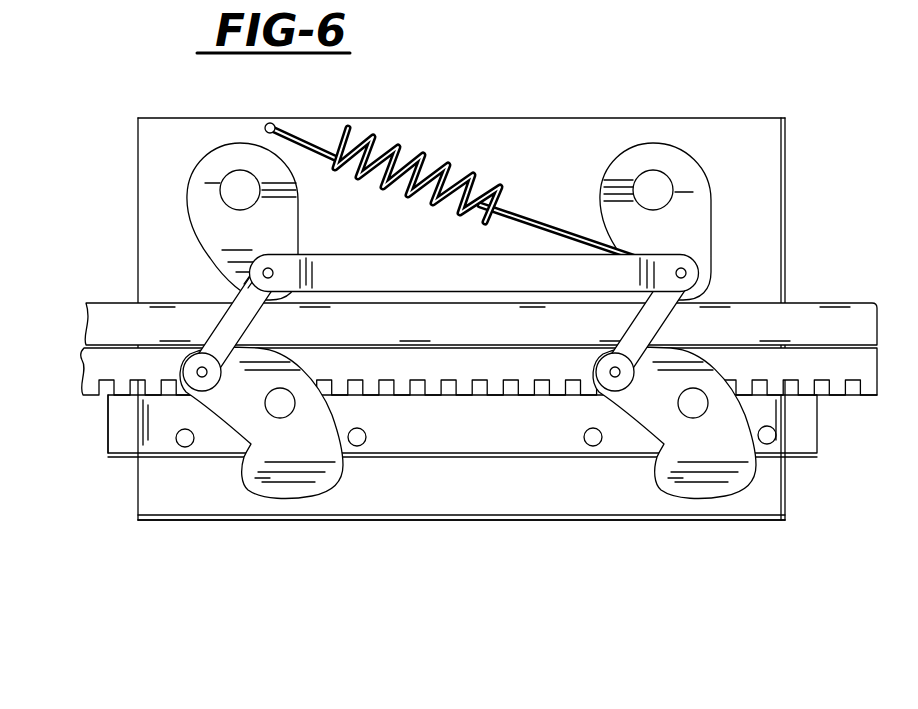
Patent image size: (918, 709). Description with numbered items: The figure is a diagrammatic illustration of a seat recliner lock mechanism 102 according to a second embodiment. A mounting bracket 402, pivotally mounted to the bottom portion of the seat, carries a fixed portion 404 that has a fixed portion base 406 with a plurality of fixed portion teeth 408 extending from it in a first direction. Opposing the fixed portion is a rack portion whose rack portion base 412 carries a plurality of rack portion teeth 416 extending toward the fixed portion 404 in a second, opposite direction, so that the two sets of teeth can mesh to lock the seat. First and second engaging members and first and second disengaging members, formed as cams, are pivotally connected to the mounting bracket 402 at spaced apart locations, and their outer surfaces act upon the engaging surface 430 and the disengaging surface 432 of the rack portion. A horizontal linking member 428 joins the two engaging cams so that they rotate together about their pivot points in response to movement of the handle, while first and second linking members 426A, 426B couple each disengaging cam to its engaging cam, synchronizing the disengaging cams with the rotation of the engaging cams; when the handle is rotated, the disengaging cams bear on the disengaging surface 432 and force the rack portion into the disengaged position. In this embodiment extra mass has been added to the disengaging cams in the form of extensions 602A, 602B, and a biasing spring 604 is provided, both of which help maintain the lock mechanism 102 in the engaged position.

The lock mechanism 102 is at (460, 543).
The mounting bracket 402 is at (785, 118).
The fixed portion 404 is at (128, 480).
The fixed portion base 406 is at (110, 455).
The fixed portion teeth 408 is at (94, 412).
The rack portion base 412 is at (812, 303).
The rack portion teeth 416 is at (842, 412).
The first linking member 426A is at (205, 143).
The second linking member 426B is at (641, 143).
The horizontal linking member 428 is at (338, 255).
The engaging surface 430 is at (89, 293).
The disengaging surface 432 is at (90, 359).
The extension 602A is at (317, 497).
The extension 602B is at (706, 497).
The biasing spring 604 is at (454, 163).